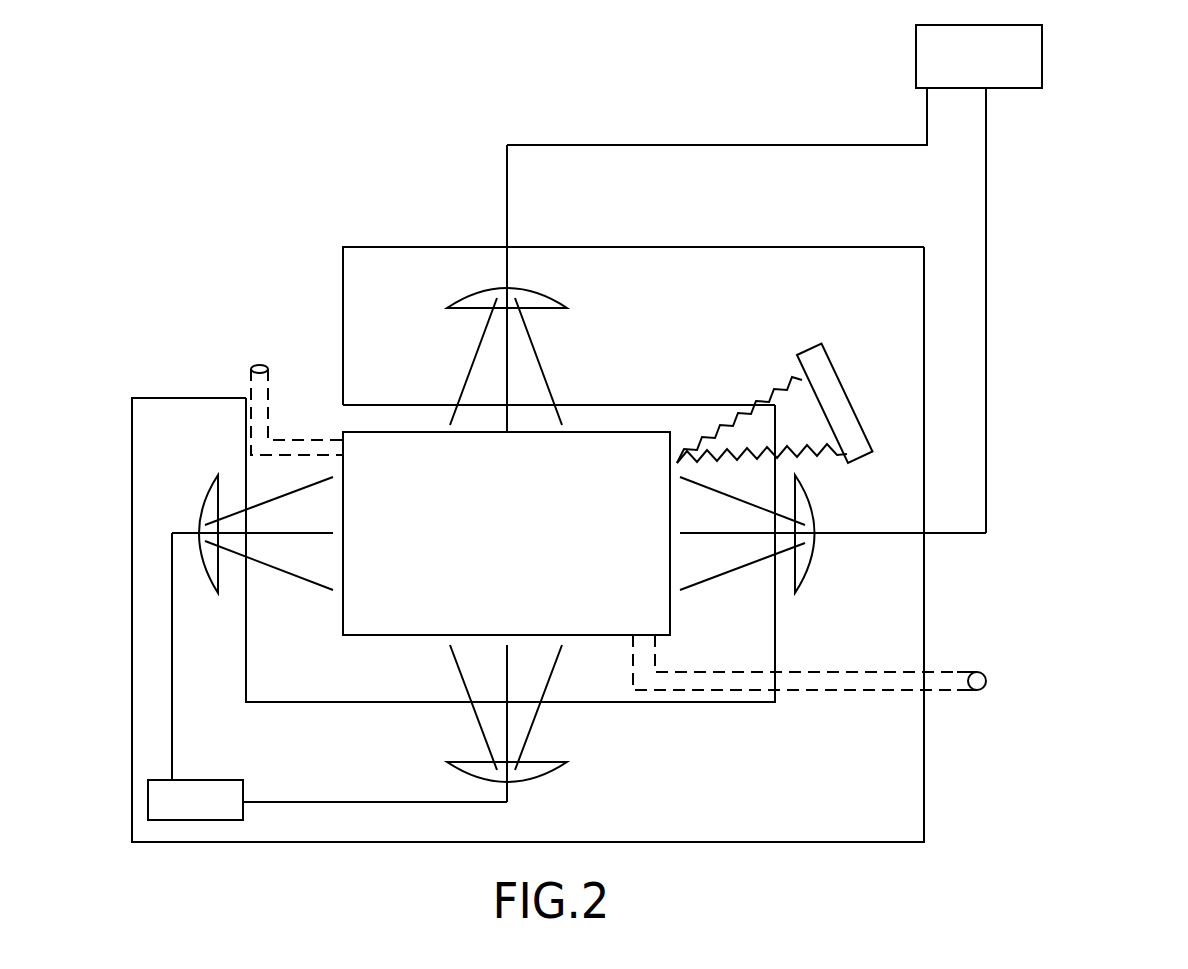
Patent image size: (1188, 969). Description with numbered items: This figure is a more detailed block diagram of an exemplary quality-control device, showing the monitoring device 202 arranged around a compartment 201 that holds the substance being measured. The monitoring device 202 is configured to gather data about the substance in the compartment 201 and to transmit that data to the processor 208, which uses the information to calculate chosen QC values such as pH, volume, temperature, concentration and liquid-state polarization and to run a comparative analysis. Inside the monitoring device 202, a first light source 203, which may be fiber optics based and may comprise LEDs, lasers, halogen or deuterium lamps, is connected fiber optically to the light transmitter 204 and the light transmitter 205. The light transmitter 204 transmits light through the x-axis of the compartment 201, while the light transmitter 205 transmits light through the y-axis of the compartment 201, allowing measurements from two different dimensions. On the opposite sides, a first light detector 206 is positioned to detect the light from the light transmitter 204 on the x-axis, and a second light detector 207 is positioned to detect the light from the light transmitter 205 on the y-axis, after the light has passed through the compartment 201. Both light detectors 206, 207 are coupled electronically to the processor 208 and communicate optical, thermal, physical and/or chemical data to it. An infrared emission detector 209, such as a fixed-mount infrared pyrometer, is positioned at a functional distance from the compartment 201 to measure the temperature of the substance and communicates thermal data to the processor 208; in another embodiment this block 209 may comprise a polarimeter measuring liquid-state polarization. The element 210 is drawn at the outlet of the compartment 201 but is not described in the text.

The compartment 201 is at (487, 549).
The monitoring device 202 is at (775, 272).
The first light source 203 is at (215, 778).
The light transmitter 204 is at (197, 515).
The light transmitter 205 is at (565, 762).
The first light detector 206 is at (808, 495).
The second light detector 207 is at (520, 290).
The processor 208 is at (1042, 53).
The infrared emission detector 209 is at (847, 392).
The outlet tube 210 is at (813, 679).